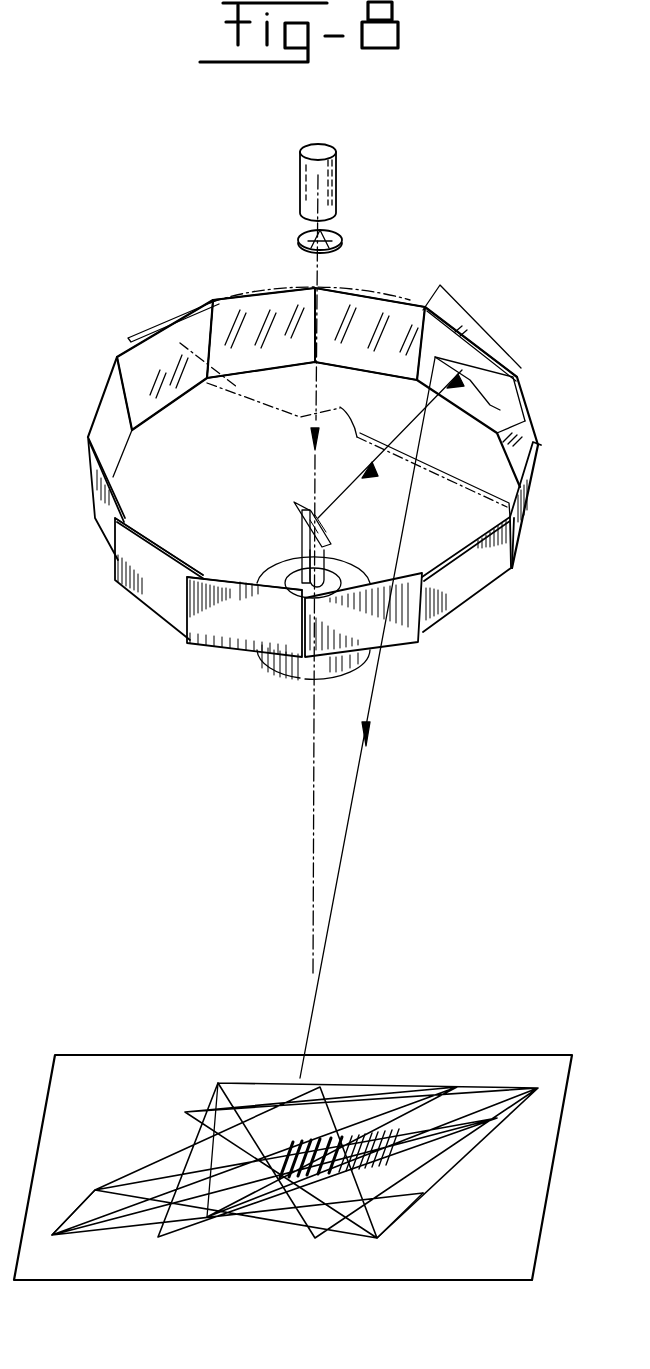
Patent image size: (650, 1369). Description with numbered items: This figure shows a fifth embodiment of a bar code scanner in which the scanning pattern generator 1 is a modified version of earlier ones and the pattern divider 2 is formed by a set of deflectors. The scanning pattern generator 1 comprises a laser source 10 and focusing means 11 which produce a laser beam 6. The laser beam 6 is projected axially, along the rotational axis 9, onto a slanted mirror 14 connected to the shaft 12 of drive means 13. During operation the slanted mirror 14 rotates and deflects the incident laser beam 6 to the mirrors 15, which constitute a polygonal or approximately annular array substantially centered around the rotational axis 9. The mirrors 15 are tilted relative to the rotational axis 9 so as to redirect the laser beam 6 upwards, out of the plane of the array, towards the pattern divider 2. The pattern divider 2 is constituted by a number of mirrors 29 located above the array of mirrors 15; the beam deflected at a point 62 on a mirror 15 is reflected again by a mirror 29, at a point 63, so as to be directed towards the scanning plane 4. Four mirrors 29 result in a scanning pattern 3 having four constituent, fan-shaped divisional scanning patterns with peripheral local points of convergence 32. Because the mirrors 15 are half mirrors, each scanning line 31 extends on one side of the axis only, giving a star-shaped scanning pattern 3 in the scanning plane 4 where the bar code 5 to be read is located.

The scanning pattern generator 1 is at (75, 507).
The scanning pattern divider 2 is at (422, 285).
The scanning pattern 3 is at (370, 1083).
The scanning plane 4 is at (127, 1067).
The bar code 5 is at (392, 1160).
The laser beam 6 is at (361, 474).
The rotational axis 9 is at (312, 730).
The laser source 10 is at (335, 202).
The focusing means 11 is at (333, 250).
The shaft 12 is at (324, 567).
The drive means 13 is at (288, 660).
The slanted mirror 14 is at (294, 510).
The mirrors 15 is at (207, 607).
The mirrors 29 is at (163, 323).
The scanning line 31 is at (283, 1238).
The peripheral local points of convergence 32 is at (52, 1240).
The point 62 is at (507, 407).
The point 63 is at (437, 350).